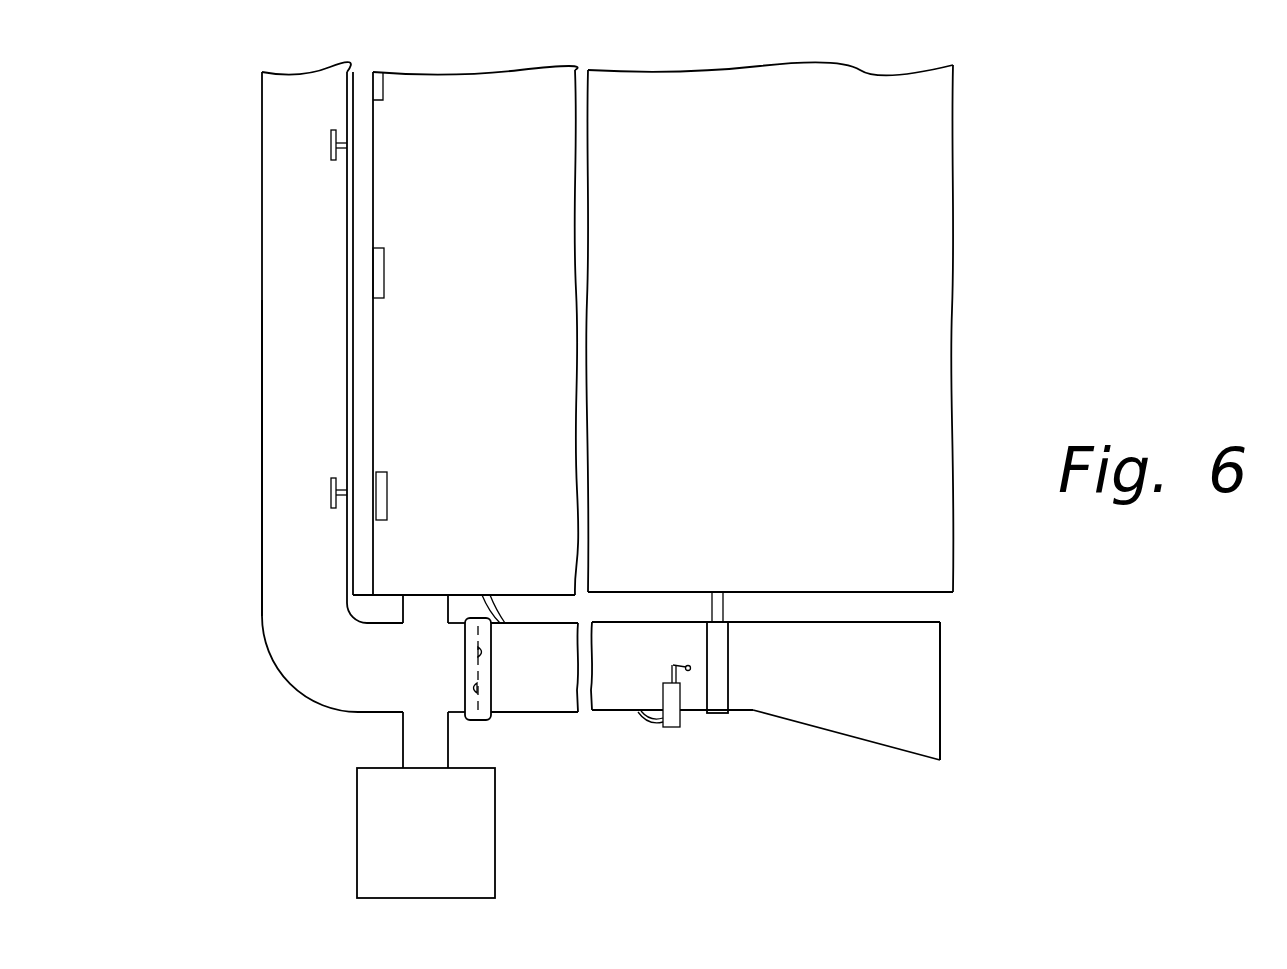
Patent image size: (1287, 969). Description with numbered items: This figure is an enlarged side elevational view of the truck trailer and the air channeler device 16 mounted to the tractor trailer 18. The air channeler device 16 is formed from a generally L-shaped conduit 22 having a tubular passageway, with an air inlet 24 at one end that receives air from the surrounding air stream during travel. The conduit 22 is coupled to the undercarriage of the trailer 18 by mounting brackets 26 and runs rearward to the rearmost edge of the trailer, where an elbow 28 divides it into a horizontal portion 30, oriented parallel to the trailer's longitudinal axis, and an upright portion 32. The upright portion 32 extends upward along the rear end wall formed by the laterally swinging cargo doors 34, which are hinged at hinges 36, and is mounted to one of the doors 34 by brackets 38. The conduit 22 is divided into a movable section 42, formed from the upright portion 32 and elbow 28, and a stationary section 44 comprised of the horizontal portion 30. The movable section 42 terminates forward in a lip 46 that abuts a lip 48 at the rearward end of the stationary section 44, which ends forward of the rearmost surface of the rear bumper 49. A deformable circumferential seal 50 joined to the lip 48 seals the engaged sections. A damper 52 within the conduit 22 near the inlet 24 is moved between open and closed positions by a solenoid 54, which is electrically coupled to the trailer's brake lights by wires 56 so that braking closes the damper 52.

The air channeler device 16 is at (228, 376).
The tractor trailer 18 is at (742, 250).
The conduit 22 is at (256, 266).
The air inlet 24 is at (940, 673).
The mounting brackets 26 is at (722, 608).
The elbow 28 is at (313, 684).
The horizontal portion 30 is at (644, 661).
The upright portion 32 is at (322, 318).
The cargo doors 34 is at (371, 402).
The hinges 36 is at (385, 268).
The brackets 38 is at (345, 488).
The movable section 42 is at (262, 578).
The stationary section 44 is at (817, 630).
The lip 46 is at (470, 654).
The lip 48 is at (484, 690).
The rear bumper 49 is at (368, 858).
The circumferential seal 50 is at (483, 716).
The damper 52 is at (690, 667).
The solenoid 54 is at (682, 727).
The wires 56 is at (500, 612).